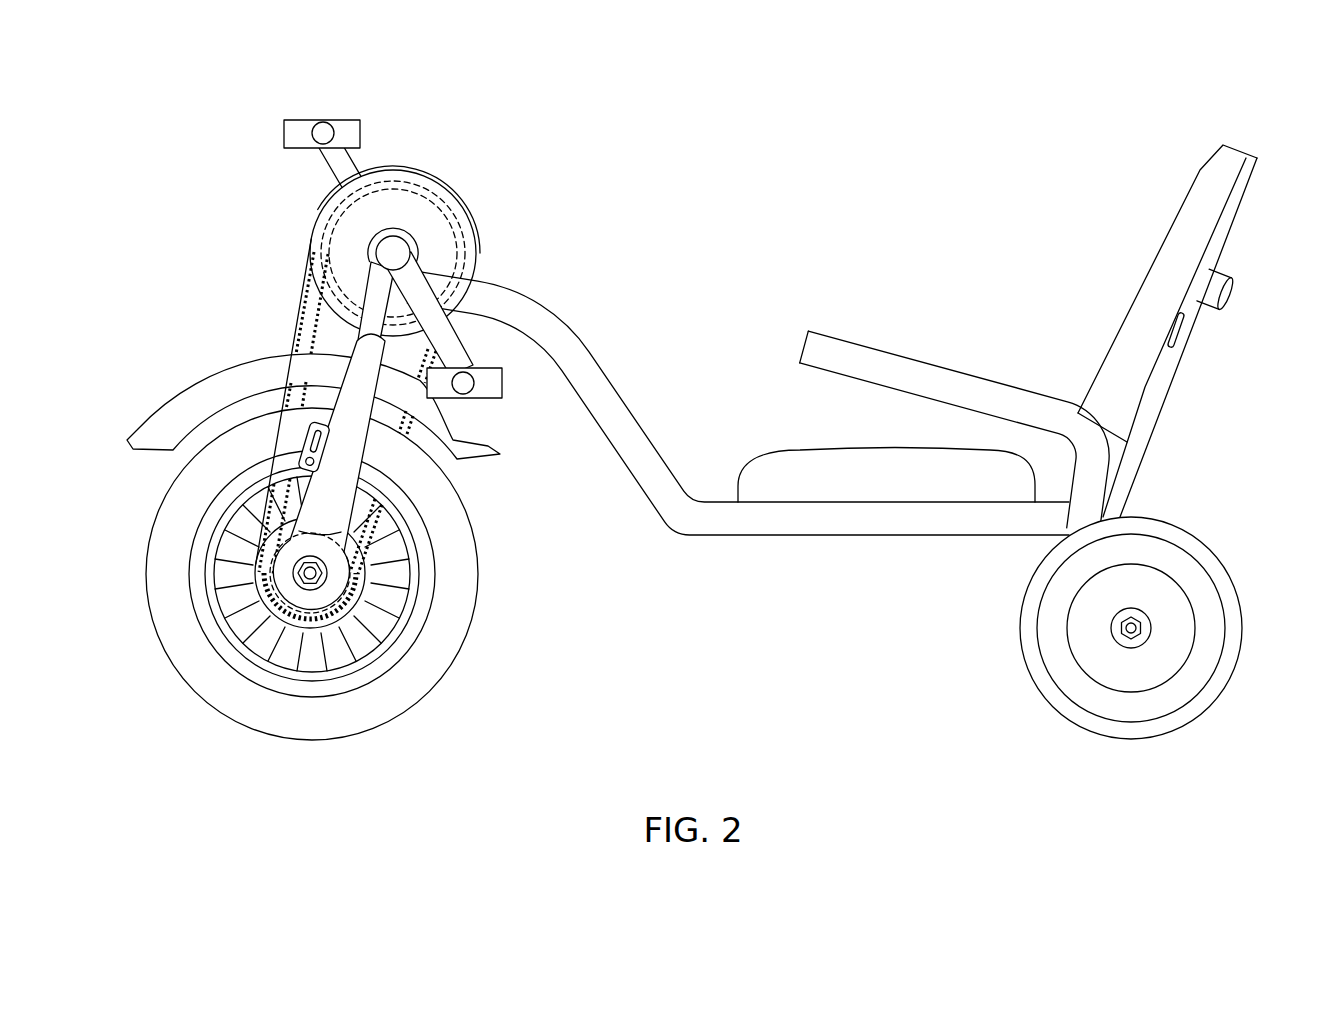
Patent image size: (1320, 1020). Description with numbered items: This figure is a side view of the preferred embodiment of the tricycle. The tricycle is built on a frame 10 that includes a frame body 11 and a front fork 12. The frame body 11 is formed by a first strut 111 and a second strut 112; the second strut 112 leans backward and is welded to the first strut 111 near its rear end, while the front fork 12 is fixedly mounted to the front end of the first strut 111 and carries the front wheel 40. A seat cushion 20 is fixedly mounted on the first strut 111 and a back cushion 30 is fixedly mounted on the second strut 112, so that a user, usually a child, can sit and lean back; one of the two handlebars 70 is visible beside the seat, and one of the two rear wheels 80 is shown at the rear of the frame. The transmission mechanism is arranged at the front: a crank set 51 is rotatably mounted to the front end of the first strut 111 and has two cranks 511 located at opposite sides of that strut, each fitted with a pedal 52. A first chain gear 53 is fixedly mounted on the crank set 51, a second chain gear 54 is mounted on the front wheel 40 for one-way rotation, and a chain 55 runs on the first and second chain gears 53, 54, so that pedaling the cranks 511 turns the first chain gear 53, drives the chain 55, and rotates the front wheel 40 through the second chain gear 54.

The frame 10 is at (701, 421).
The frame body 11 is at (859, 370).
The first strut 111 is at (630, 425).
The second strut 112 is at (1168, 388).
The front fork 12 is at (388, 312).
The seat cushion 20 is at (825, 468).
The back cushion 30 is at (1195, 220).
The front wheel 40 is at (410, 680).
The crank set 51 is at (376, 152).
The crank 511 is at (417, 287).
The pedal 52 is at (350, 120).
The first chain gear 53 is at (440, 237).
The second chain gear 54 is at (292, 537).
The chain 55 is at (307, 332).
The handlebar 70 is at (873, 358).
The rear wheel 80 is at (1083, 698).